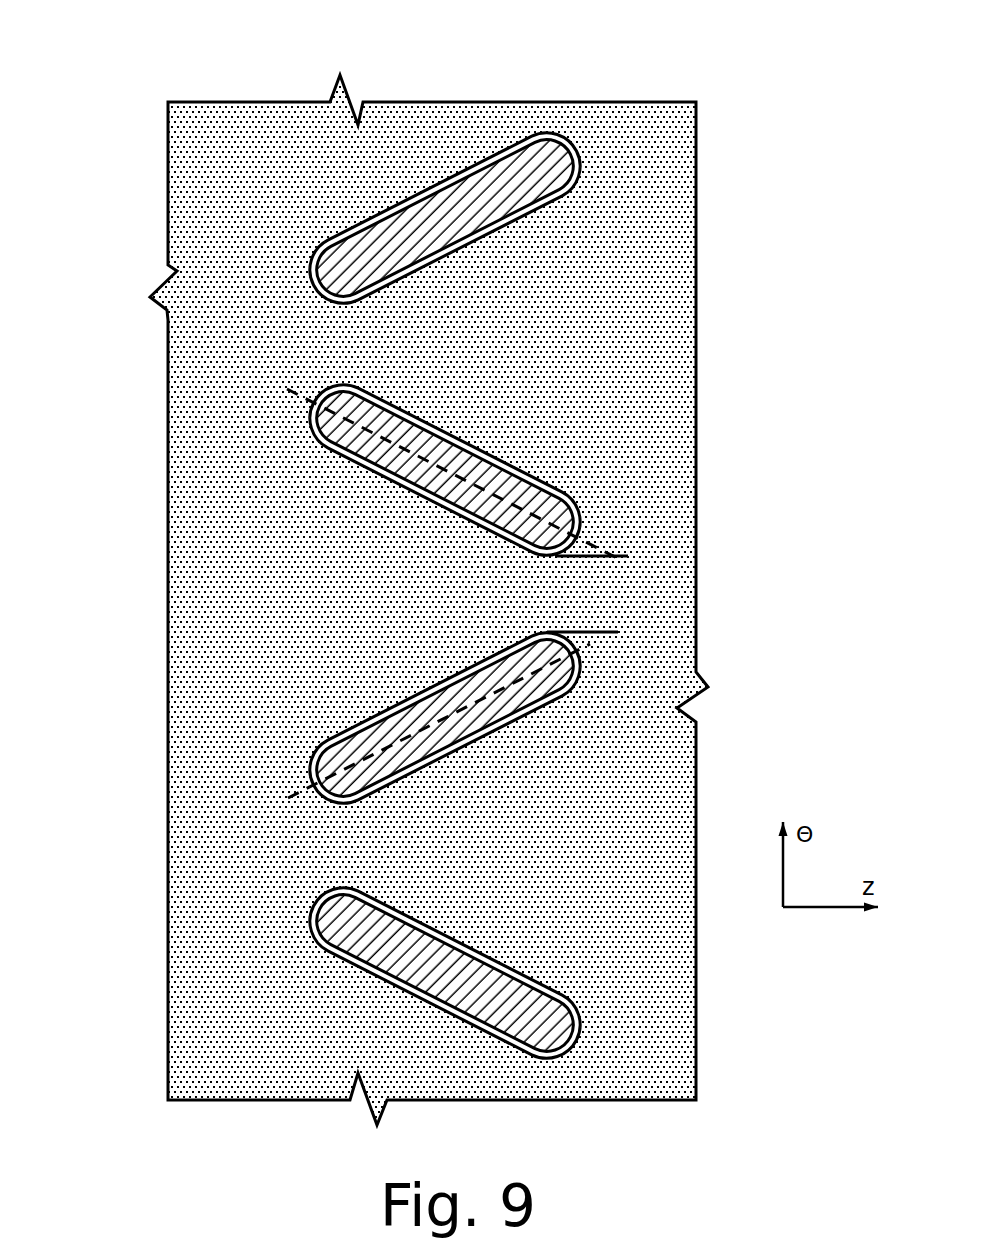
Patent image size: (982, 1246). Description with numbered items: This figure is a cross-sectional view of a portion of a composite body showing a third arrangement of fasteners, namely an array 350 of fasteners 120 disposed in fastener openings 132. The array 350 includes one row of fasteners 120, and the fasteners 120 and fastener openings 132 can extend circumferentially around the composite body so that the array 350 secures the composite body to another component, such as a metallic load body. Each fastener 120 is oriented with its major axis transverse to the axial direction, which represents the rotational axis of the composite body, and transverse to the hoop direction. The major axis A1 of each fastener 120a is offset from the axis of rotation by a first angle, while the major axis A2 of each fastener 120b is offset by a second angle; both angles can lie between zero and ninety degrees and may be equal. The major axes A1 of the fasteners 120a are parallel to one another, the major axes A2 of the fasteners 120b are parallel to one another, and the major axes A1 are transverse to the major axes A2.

The fastener 120 is at (428, 536).
The fastener 120a is at (495, 460).
The fastener 120b is at (505, 182).
The fastener opening 132 is at (568, 134).
The array 350 is at (263, 317).
The major axis A1 is at (428, 460).
The major axis A2 is at (510, 685).